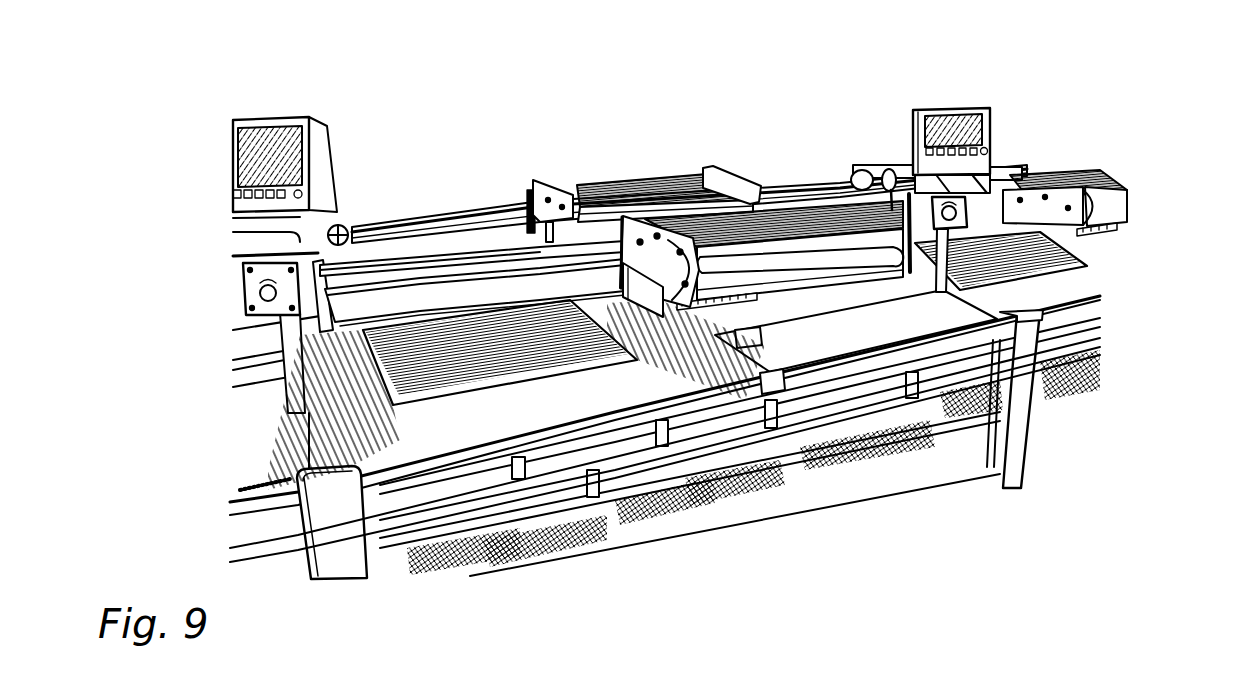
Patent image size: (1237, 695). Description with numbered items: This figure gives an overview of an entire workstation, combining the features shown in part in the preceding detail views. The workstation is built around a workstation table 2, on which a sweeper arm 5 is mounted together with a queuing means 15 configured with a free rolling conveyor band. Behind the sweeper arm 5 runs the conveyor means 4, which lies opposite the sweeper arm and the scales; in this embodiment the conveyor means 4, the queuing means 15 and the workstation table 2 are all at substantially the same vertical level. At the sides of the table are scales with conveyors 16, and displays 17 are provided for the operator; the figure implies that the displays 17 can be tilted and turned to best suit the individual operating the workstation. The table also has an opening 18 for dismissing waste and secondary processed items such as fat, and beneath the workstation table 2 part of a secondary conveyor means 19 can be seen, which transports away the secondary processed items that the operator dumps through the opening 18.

The workstation table 2 is at (1060, 308).
The conveyor means 4 is at (447, 262).
The sweeper arm 5 is at (385, 247).
The queuing means 15 is at (1003, 234).
The scale with conveyor 16 is at (597, 190).
The display 17 is at (241, 152).
The opening 18 is at (747, 337).
The secondary conveyor means 19 is at (570, 523).